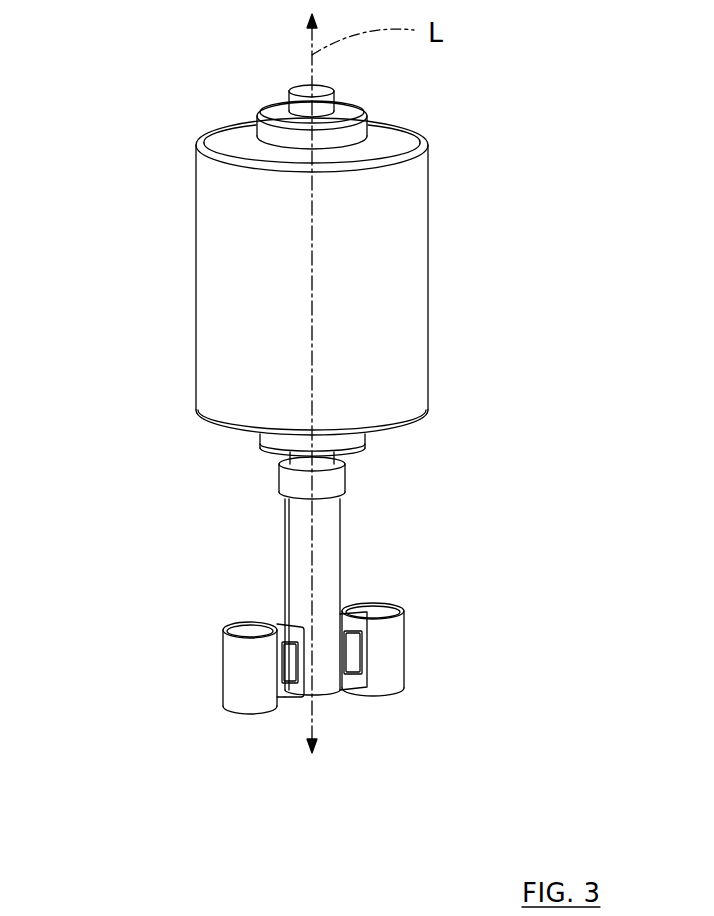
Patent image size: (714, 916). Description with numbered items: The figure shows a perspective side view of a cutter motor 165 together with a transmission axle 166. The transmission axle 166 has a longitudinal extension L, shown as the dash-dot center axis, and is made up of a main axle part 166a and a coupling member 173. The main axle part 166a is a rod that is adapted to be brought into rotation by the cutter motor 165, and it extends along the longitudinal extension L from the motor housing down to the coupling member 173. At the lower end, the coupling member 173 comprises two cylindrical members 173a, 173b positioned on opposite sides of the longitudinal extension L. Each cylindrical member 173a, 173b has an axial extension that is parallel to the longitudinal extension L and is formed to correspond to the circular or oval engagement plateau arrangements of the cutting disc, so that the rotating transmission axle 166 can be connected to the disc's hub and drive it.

The cutter motor 165 is at (225, 230).
The transmission axle 166 is at (226, 488).
The main axle part 166a is at (302, 82).
The coupling member 173 is at (307, 616).
The cylindrical member 173a is at (240, 663).
The cylindrical member 173b is at (392, 645).